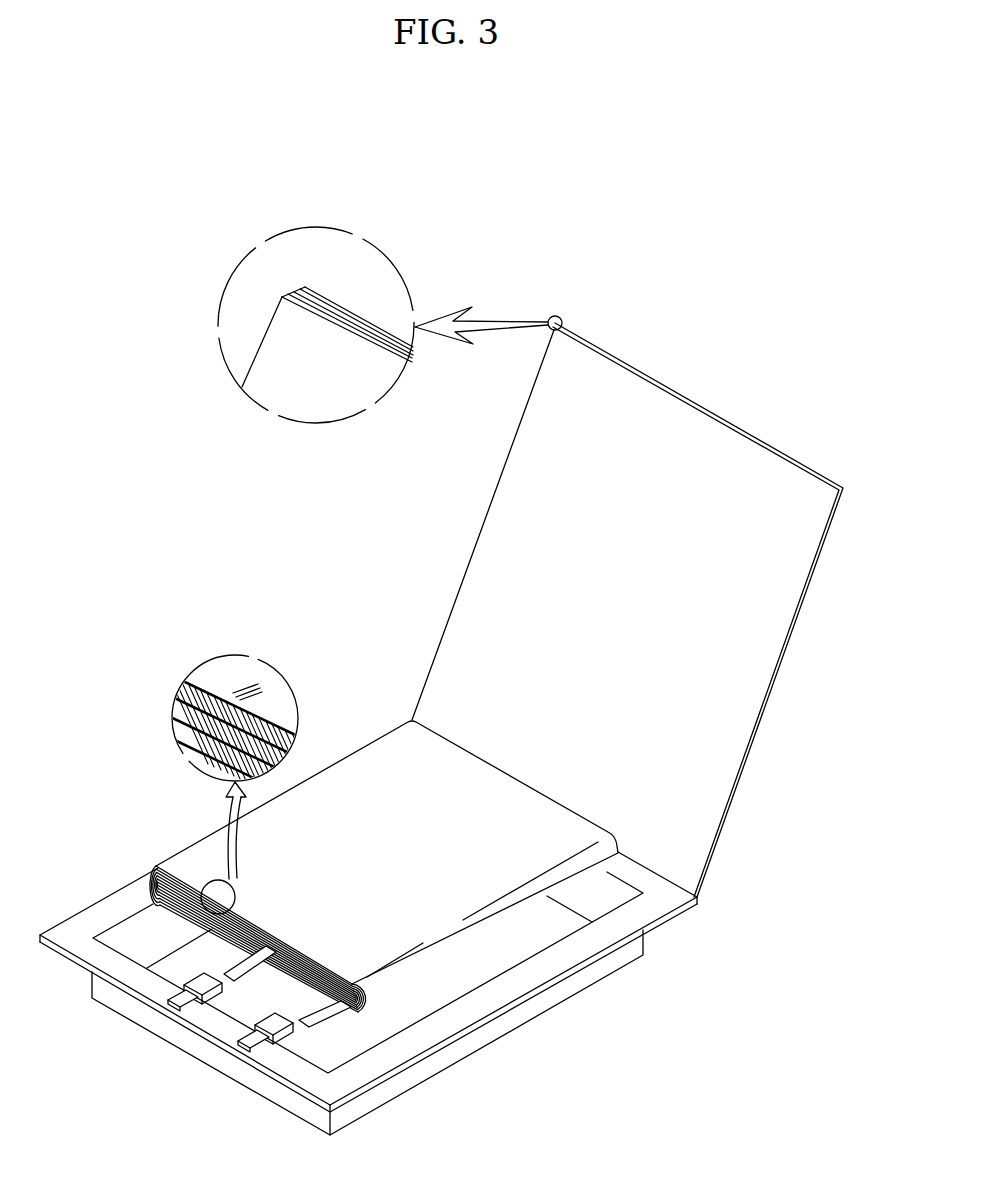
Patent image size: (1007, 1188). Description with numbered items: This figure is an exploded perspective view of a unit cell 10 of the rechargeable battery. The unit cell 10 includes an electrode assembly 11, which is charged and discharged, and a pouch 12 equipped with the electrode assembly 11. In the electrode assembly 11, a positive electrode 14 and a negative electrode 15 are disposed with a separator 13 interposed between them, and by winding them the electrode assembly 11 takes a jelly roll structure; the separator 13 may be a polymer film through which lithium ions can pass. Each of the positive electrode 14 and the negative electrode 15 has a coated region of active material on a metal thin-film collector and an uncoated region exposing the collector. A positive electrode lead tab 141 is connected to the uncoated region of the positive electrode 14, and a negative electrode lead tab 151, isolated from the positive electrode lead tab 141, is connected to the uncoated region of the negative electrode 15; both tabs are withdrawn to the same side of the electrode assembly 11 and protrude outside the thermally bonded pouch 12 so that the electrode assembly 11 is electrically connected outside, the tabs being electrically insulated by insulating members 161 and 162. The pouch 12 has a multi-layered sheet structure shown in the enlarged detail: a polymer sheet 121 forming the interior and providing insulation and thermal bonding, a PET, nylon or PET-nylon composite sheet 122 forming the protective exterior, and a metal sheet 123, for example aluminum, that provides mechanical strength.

The unit cell 10 is at (340, 505).
The electrode assembly 11 is at (179, 830).
The pouch 12 is at (717, 832).
The polymer sheet 121 is at (284, 296).
The PET-nylon composite sheet 122 is at (303, 288).
The metal sheet 123 is at (295, 292).
The separator 13 is at (278, 727).
The positive electrode 14 is at (182, 710).
The negative electrode 15 is at (187, 683).
The positive electrode lead tab 141 is at (177, 1003).
The negative electrode lead tab 151 is at (240, 1040).
The insulating member 161 is at (205, 985).
The insulating member 162 is at (282, 1023).